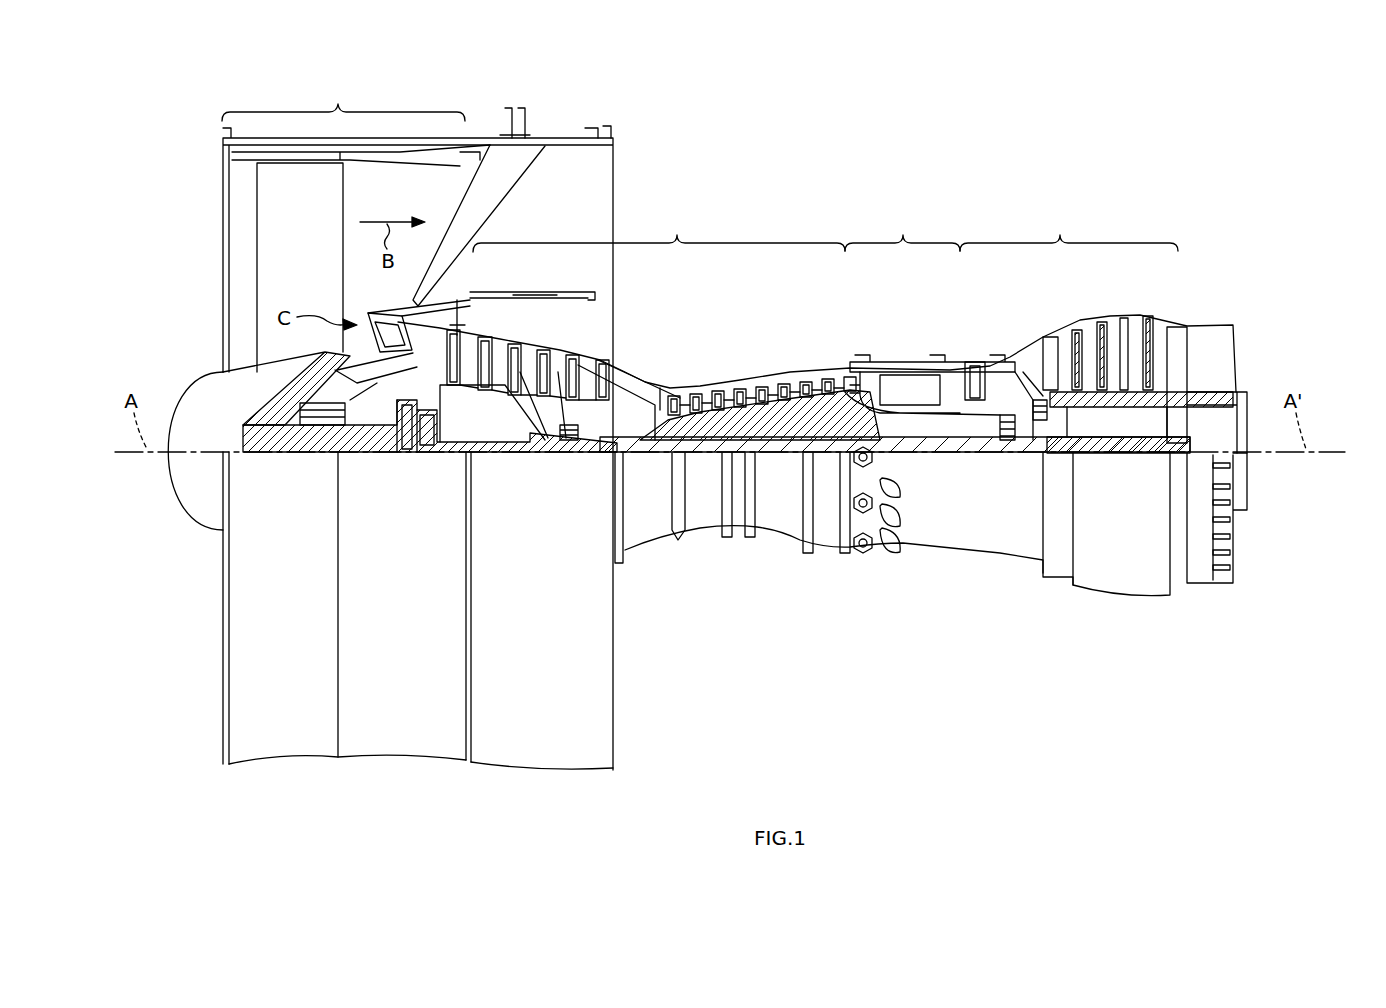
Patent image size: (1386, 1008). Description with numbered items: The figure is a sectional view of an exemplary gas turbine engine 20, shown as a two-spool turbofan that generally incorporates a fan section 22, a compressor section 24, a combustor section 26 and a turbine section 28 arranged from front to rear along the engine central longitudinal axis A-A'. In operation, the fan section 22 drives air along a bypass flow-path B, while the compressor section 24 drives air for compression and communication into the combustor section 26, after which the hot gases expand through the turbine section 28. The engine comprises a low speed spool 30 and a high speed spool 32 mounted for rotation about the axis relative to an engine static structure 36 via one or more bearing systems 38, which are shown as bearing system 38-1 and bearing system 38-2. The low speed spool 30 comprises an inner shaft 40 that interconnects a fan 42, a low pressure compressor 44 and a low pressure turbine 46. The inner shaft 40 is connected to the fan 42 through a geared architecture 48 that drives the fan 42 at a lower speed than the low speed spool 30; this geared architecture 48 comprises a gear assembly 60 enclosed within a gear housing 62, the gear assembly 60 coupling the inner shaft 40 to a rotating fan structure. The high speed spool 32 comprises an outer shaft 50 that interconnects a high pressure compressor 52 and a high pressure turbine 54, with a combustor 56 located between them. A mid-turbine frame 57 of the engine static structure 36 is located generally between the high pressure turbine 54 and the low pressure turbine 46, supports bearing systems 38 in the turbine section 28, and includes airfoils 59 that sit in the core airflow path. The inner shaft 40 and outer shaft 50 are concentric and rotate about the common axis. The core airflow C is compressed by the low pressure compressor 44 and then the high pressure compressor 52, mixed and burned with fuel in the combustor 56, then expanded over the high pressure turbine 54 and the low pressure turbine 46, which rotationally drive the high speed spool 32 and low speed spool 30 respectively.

The gas turbine engine 20 is at (962, 167).
The fan section 22 is at (343, 99).
The compressor section 24 is at (659, 230).
The combustor section 26 is at (902, 229).
The turbine section 28 is at (1069, 229).
The low speed spool 30 is at (785, 497).
The high speed spool 32 is at (822, 418).
The engine static structure 36 is at (203, 770).
The bearing system 38 is at (1010, 454).
The bearing system 38-1 is at (312, 444).
The bearing system 38-2 is at (574, 442).
The inner shaft 40 is at (637, 454).
The fan 42 is at (284, 268).
The low pressure compressor section 44 is at (552, 345).
The low pressure turbine section 46 is at (1108, 345).
The geared architecture 48 is at (431, 475).
The outer shaft 50 is at (897, 442).
The high pressure compressor 52 is at (775, 380).
The high pressure turbine section 54 is at (976, 368).
The combustor 56 is at (910, 388).
The mid-turbine frame 57 is at (1020, 380).
The airfoils 59 is at (1037, 345).
The gear assembly 60 is at (437, 432).
The gear housing 62 is at (440, 393).